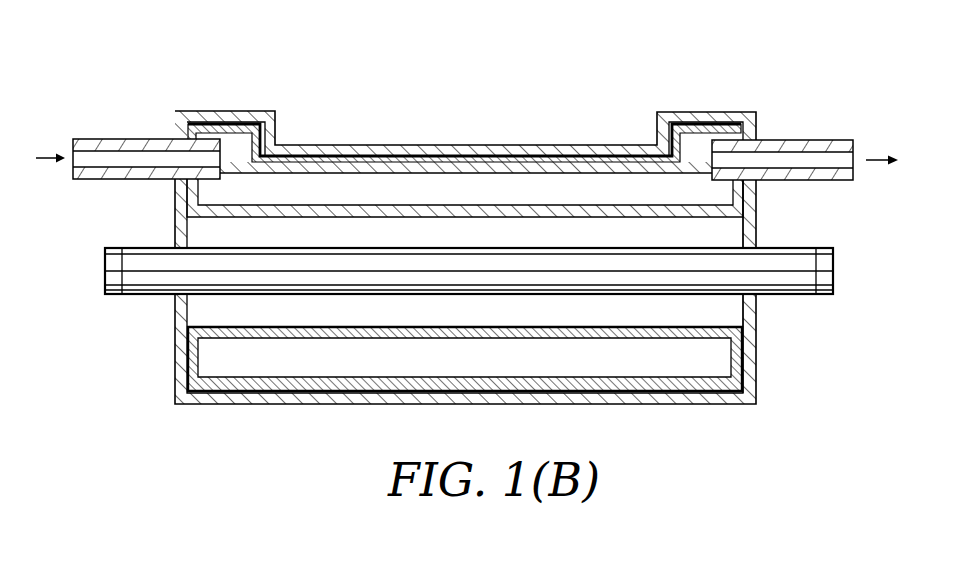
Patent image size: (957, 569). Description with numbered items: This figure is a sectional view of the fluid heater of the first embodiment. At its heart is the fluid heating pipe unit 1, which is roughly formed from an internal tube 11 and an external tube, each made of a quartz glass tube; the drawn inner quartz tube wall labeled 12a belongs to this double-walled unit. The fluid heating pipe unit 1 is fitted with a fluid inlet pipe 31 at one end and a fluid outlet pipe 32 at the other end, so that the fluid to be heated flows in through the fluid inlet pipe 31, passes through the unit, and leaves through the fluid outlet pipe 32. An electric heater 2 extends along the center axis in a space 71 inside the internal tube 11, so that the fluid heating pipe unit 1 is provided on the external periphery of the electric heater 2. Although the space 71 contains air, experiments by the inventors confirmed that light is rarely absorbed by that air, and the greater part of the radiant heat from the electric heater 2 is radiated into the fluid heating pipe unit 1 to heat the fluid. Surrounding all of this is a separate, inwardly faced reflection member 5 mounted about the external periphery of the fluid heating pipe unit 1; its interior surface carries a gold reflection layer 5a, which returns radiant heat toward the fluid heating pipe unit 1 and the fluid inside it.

The fluid heating pipe unit 1 is at (465, 86).
The internal tube 11 is at (401, 148).
The inner quartz tube 12a is at (447, 36).
The fluid inlet pipe 31 is at (127, 138).
The fluid outlet pipe 32 is at (808, 139).
The space 71 is at (743, 238).
The electric heater 2 is at (123, 295).
The reflection member 5 is at (716, 405).
The gold reflection layer 5a is at (228, 391).